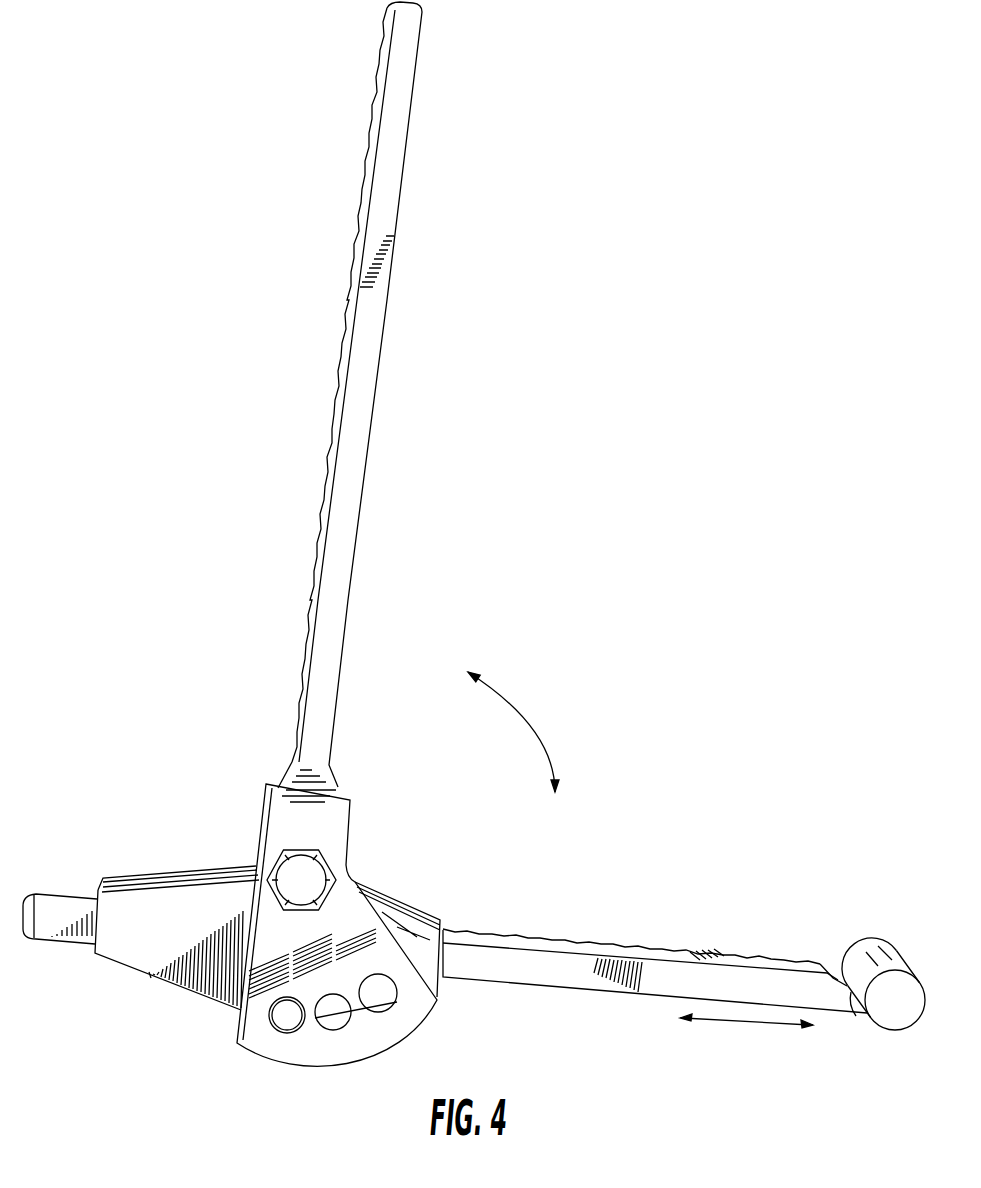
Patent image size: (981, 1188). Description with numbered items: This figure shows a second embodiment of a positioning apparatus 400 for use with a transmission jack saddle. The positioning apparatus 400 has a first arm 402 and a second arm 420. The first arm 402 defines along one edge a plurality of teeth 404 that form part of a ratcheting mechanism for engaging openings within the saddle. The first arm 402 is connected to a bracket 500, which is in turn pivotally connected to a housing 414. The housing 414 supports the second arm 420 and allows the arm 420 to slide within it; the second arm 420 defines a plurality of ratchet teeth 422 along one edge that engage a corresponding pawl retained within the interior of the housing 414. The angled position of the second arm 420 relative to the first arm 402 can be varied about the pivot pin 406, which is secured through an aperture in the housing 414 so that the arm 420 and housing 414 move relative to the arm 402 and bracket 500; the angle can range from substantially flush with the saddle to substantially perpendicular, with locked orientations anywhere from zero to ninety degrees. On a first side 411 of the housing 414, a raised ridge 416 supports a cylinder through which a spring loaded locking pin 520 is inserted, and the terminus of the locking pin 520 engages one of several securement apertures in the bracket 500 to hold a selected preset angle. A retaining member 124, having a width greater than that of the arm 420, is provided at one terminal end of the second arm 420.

The positioning apparatus 400 is at (183, 283).
The first arm 402 is at (358, 396).
The teeth 404 is at (366, 127).
The pivot pin 406 is at (300, 878).
The first side 411 is at (407, 893).
The housing 414 is at (120, 955).
The raised ridge 416 is at (185, 877).
The second arm 420 is at (697, 953).
The ratchet teeth 422 is at (590, 940).
The retaining member 124 is at (900, 953).
The bracket 500 is at (255, 1043).
The locking pin 520 is at (285, 1015).